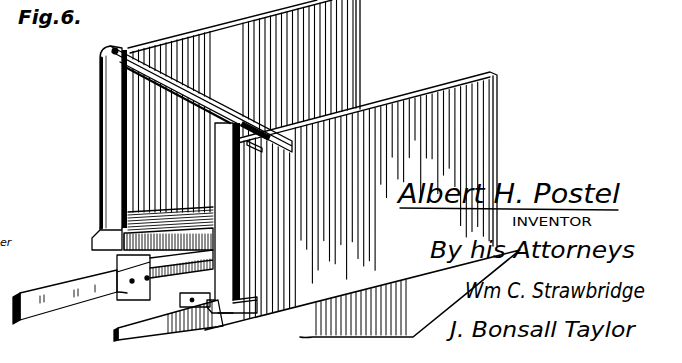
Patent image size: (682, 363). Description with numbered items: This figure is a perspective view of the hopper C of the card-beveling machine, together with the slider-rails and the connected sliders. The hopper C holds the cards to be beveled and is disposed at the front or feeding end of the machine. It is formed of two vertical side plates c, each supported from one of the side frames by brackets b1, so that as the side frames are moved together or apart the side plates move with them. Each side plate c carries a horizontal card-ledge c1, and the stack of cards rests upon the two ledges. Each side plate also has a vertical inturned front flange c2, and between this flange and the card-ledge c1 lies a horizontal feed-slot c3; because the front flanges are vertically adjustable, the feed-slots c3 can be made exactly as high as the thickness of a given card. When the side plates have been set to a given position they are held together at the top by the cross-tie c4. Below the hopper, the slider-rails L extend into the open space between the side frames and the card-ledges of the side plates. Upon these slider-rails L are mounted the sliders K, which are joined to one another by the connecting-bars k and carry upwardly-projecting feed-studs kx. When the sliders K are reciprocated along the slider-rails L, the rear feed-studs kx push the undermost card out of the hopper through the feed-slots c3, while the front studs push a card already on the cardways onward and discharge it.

The hopper C is at (390, 30).
The side plate c is at (312, 159).
The card-ledge c1 is at (150, 228).
The front flange c2 is at (170, 173).
The feed-slot c3 is at (103, 232).
The cross-tie c4 is at (142, 62).
The connecting-bar k is at (113, 271).
The feed-stud kx is at (107, 258).
The slider K is at (127, 293).
The slider-rail L is at (117, 333).
The bracket b1 is at (362, 294).